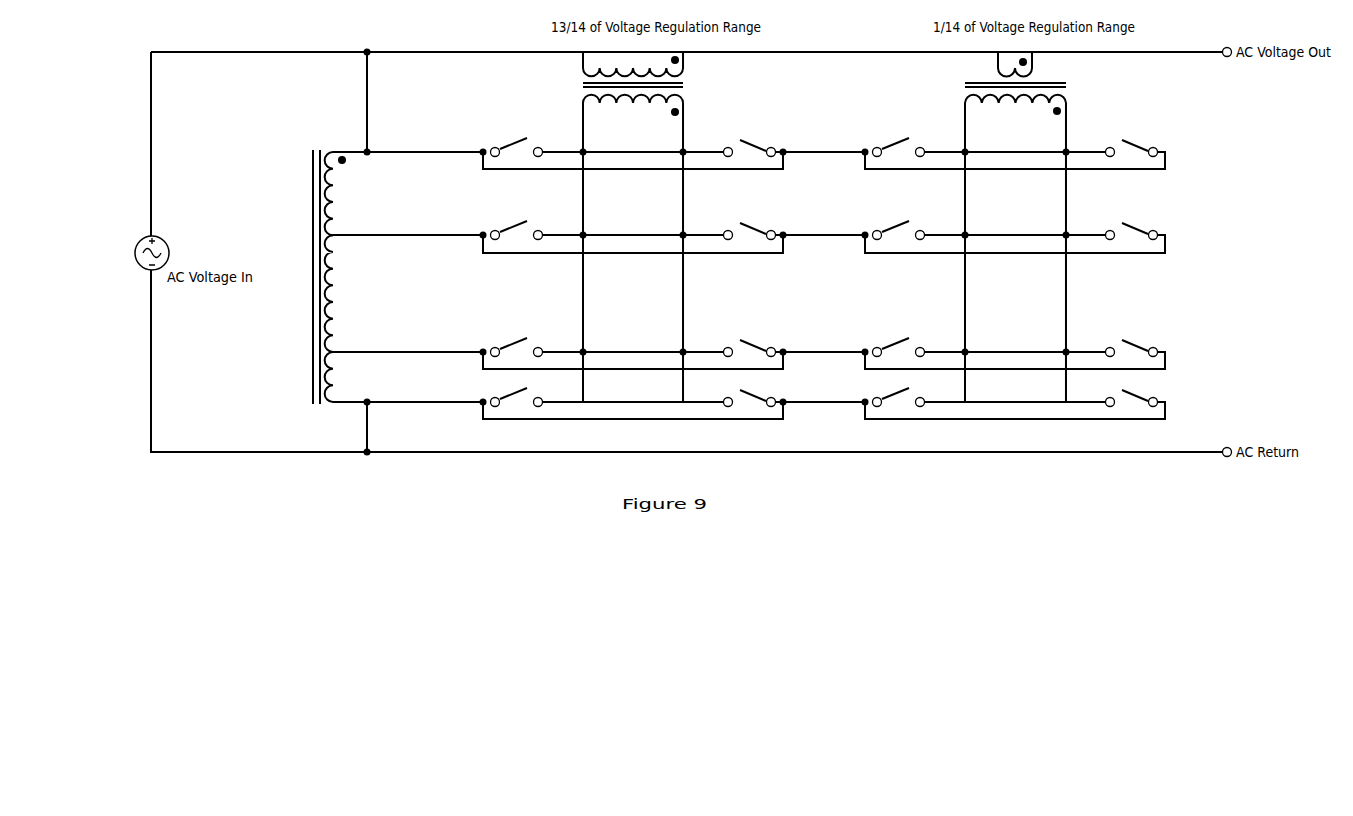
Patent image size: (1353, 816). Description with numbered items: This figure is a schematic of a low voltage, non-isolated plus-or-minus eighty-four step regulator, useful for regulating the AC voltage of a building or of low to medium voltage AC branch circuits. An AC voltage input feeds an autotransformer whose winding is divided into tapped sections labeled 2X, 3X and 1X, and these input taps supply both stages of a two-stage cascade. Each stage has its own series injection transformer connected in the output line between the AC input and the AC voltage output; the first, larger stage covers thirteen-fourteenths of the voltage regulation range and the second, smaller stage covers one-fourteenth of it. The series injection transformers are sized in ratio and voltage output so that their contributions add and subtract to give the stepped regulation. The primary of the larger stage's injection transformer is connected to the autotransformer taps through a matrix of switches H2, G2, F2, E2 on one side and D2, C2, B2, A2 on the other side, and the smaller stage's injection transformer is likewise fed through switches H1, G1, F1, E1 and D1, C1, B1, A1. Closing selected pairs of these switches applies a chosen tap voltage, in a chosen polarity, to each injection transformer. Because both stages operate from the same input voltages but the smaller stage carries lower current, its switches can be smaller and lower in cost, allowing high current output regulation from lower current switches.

The switch H2 is at (517, 140).
The switch G2 is at (517, 223).
The switch F2 is at (517, 340).
The switch E2 is at (517, 390).
The switch D2 is at (750, 140).
The switch C2 is at (750, 223).
The switch B2 is at (750, 340).
The switch A2 is at (750, 390).
The switch H1 is at (899, 140).
The switch G1 is at (899, 223).
The switch F1 is at (899, 340).
The switch E1 is at (899, 390).
The switch D1 is at (1132, 140).
The switch C1 is at (1132, 223).
The switch B1 is at (1132, 340).
The switch A1 is at (1132, 390).
The 2X tapped winding section 2X is at (347, 193).
The 3X tapped winding section 3X is at (347, 293).
The 1X tapped winding section 1X is at (347, 377).